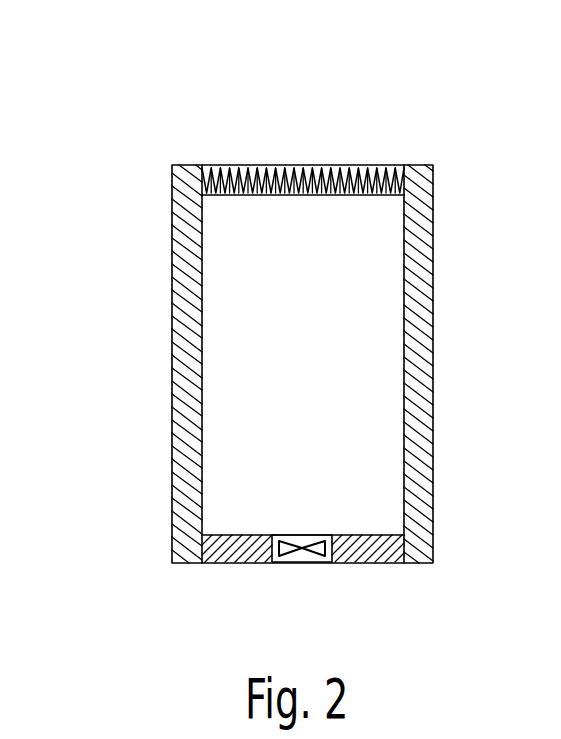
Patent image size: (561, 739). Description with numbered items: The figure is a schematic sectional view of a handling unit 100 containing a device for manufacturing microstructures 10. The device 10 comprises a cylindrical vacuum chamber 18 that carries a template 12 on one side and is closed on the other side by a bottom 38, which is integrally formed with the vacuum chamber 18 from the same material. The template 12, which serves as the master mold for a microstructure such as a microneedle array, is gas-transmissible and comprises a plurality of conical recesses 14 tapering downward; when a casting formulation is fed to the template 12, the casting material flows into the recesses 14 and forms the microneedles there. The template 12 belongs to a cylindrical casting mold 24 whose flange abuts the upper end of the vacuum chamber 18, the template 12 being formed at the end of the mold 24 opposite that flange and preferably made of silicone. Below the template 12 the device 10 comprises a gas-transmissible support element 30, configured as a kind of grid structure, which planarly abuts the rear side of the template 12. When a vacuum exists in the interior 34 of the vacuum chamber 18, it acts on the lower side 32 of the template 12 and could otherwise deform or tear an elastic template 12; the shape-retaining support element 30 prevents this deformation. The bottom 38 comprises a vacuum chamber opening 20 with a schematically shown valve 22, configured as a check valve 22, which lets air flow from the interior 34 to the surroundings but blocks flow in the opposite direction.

The handling unit 100 is at (130, 147).
The device for manufacturing microstructures 10 is at (169, 129).
The template 12 is at (398, 139).
The recesses 14 is at (287, 154).
The mold 24 is at (346, 119).
The vacuum chamber 18 is at (420, 433).
The vacuum chamber opening 20 is at (270, 581).
The check valve 22 is at (305, 558).
The bottom 38 is at (378, 547).
The support element 30 is at (287, 196).
The lower side of the template 32 is at (328, 211).
The interior of the vacuum chamber 34 is at (313, 357).